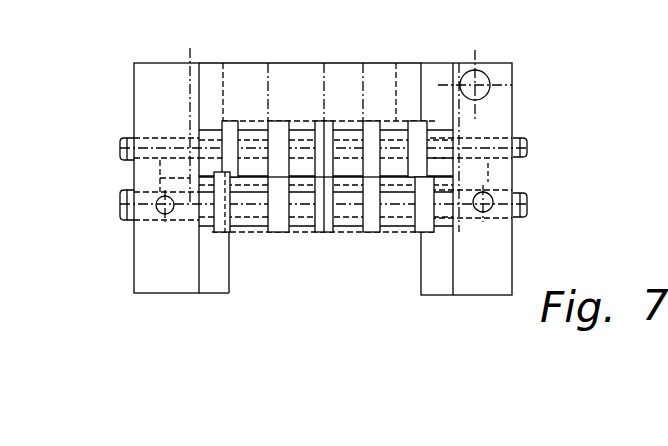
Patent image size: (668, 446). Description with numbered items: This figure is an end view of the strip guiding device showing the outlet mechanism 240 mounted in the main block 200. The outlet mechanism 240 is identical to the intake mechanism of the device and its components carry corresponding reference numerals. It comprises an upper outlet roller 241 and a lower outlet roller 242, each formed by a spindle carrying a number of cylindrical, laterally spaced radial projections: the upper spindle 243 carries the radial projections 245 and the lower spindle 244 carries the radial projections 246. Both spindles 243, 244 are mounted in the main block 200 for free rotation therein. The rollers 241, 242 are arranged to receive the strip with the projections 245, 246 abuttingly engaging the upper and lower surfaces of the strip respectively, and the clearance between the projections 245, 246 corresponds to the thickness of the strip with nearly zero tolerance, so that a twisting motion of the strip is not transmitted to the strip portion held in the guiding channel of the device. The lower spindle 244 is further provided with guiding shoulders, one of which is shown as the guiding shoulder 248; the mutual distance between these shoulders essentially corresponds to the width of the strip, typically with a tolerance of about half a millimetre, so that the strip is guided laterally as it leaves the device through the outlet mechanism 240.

The main block 200 is at (518, 254).
The outlet mechanism 240 is at (120, 176).
The upper outlet roller 241 is at (531, 147).
The lower outlet roller 242 is at (531, 206).
The upper spindle 243 is at (521, 129).
The lower spindle 244 is at (530, 196).
The radial projections of upper roller 245 is at (420, 120).
The radial projections of lower roller 246 is at (430, 234).
The guiding shoulder 248 is at (448, 234).